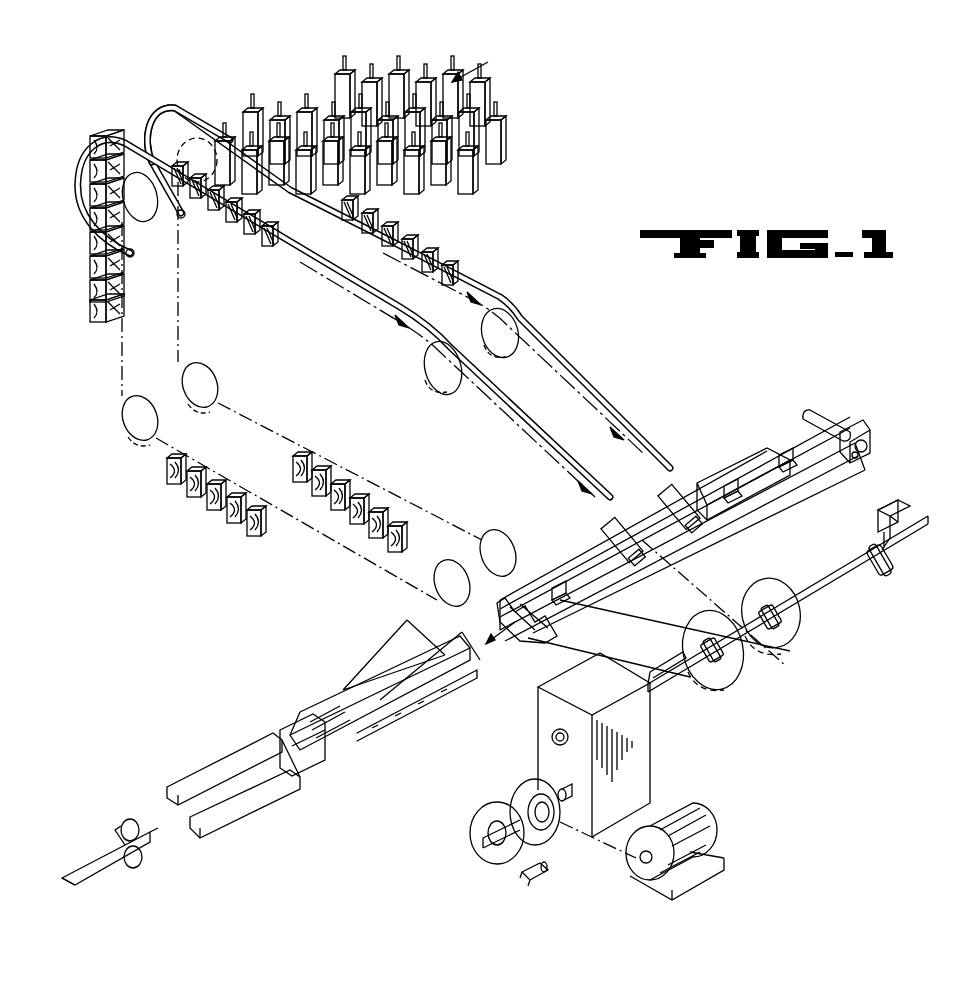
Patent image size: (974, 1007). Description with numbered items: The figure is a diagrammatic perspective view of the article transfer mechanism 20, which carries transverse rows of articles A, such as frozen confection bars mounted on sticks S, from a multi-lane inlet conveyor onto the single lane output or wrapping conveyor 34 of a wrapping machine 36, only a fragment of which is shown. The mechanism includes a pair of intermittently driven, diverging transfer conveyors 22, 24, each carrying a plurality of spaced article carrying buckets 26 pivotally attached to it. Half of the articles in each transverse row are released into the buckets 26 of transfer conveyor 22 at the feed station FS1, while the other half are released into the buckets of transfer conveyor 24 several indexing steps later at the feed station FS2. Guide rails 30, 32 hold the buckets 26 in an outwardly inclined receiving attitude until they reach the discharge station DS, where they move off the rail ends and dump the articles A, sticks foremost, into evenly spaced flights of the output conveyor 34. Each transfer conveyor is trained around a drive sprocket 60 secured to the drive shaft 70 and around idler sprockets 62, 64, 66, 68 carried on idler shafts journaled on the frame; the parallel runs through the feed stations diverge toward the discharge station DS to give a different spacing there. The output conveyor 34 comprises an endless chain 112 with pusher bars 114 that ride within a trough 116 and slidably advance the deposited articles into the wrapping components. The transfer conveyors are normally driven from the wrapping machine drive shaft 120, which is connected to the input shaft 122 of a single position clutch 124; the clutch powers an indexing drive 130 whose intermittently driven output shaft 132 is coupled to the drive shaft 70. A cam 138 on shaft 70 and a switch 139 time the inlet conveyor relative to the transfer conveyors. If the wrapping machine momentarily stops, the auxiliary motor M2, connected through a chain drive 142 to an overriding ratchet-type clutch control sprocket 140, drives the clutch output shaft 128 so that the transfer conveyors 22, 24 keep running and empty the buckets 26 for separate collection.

The feed station FS2 is at (212, 125).
The feed station FS1 is at (381, 232).
The sticks S is at (272, 118).
The articles A is at (292, 190).
The article carrying buckets 26 is at (345, 205).
The idler sprocket 64 is at (184, 218).
The article transfer mechanism 20 is at (528, 273).
The guide rail 30 is at (546, 342).
The transfer conveyor 22 is at (607, 405).
The guide rail 32 is at (533, 414).
The transfer conveyor 24 is at (534, 447).
The discharge station DS is at (657, 493).
The idler sprocket 62 is at (481, 365).
The idler sprocket 66 is at (182, 432).
The idler sprocket 68 is at (488, 530).
The drive sprocket 60 is at (745, 682).
The trough 116 is at (752, 480).
The pusher bars 114 is at (556, 598).
The output or wrapping conveyor 34 is at (862, 433).
The switch 139 is at (896, 503).
The cam 138 is at (888, 568).
The drive shaft 70 is at (841, 580).
The output shaft 132 is at (662, 692).
The indexing drive 130 is at (650, 748).
The clutch output shaft 128 is at (574, 793).
The single position clutch 124 is at (520, 798).
The input shaft 122 is at (480, 847).
The drive shaft 120 is at (520, 879).
The clutch control sprocket 140 is at (578, 874).
The chain drive 142 is at (618, 864).
The auxiliary motor M2 is at (700, 831).
The endless chain 112 is at (533, 646).
The wrapping machine 36 is at (207, 760).